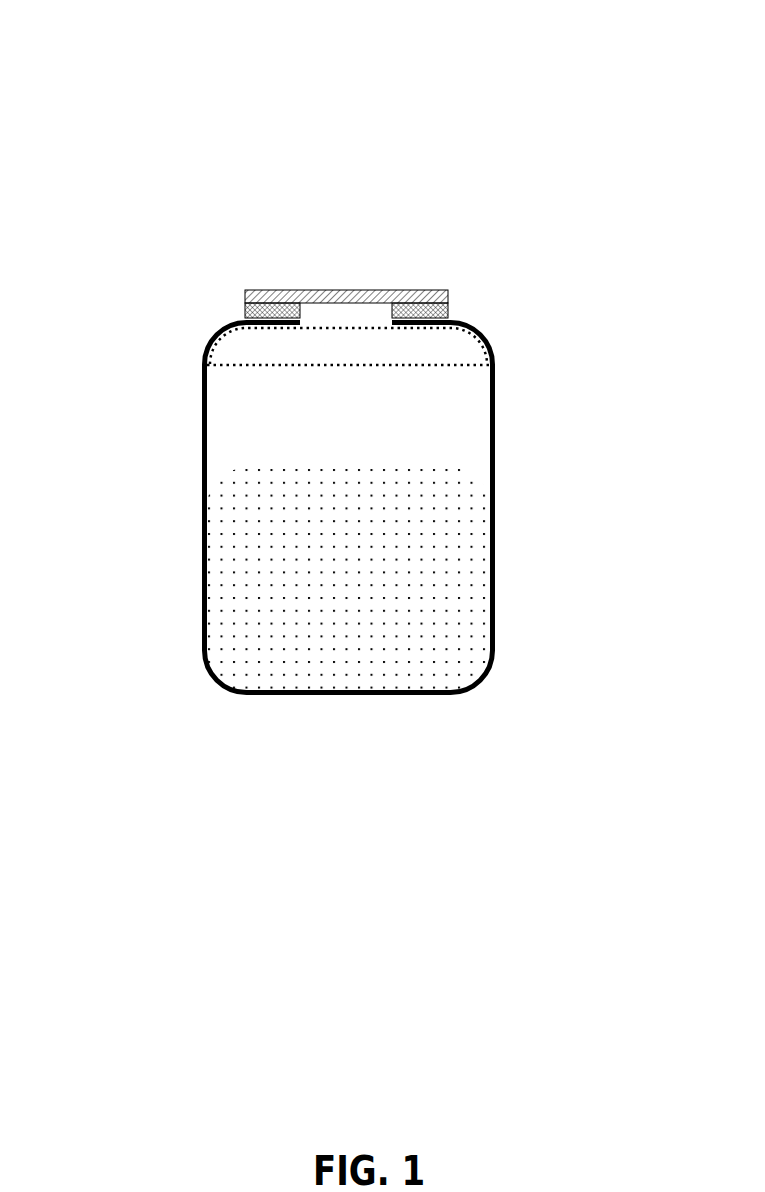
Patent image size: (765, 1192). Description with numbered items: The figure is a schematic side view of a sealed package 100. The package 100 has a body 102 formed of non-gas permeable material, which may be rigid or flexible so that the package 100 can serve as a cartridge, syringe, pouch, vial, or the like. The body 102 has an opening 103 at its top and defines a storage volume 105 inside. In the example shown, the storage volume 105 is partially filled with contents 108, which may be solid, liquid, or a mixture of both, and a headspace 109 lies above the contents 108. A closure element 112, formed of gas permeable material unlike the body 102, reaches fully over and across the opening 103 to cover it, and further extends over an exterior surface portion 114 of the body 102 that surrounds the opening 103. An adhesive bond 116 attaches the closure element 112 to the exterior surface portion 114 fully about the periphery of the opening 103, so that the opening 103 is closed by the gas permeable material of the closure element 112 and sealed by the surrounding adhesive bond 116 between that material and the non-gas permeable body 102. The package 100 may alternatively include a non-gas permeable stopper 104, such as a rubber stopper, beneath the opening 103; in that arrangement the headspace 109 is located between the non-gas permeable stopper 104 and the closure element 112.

The package 100 is at (128, 98).
The body 102 is at (201, 493).
The opening 103 is at (319, 311).
The non-gas permeable stopper 104 is at (457, 370).
The storage volume 105 is at (320, 580).
The contents 108 is at (405, 588).
The headspace 109 is at (322, 431).
The closure element 112 is at (258, 290).
The exterior surface portion 114 is at (457, 318).
The adhesive bond 116 is at (245, 310).